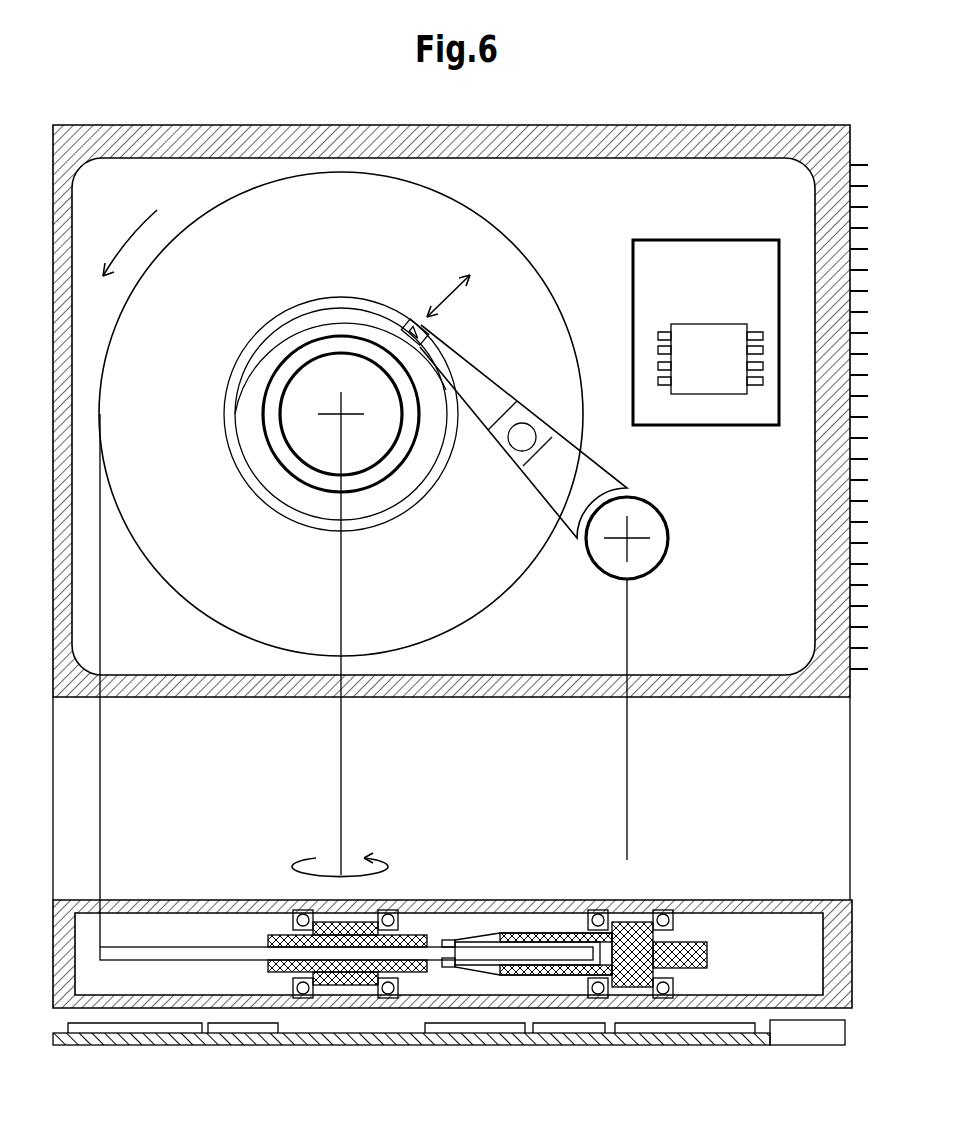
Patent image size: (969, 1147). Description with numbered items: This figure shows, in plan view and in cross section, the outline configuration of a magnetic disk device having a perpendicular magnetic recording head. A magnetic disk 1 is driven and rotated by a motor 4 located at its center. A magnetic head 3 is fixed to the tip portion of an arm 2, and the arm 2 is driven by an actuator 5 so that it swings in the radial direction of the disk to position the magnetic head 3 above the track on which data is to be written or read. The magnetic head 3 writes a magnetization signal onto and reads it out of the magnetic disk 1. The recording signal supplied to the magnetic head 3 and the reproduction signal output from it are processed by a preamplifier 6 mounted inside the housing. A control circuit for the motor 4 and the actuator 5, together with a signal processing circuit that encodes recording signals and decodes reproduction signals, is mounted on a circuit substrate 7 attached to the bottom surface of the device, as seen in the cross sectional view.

The magnetic disk 1 is at (468, 240).
The arm 2 is at (470, 388).
The magnetic head 3 is at (399, 318).
The motor 4 is at (312, 414).
The actuator 5 is at (657, 542).
The preamplifier 6 is at (690, 335).
The circuit substrate 7 is at (722, 1039).